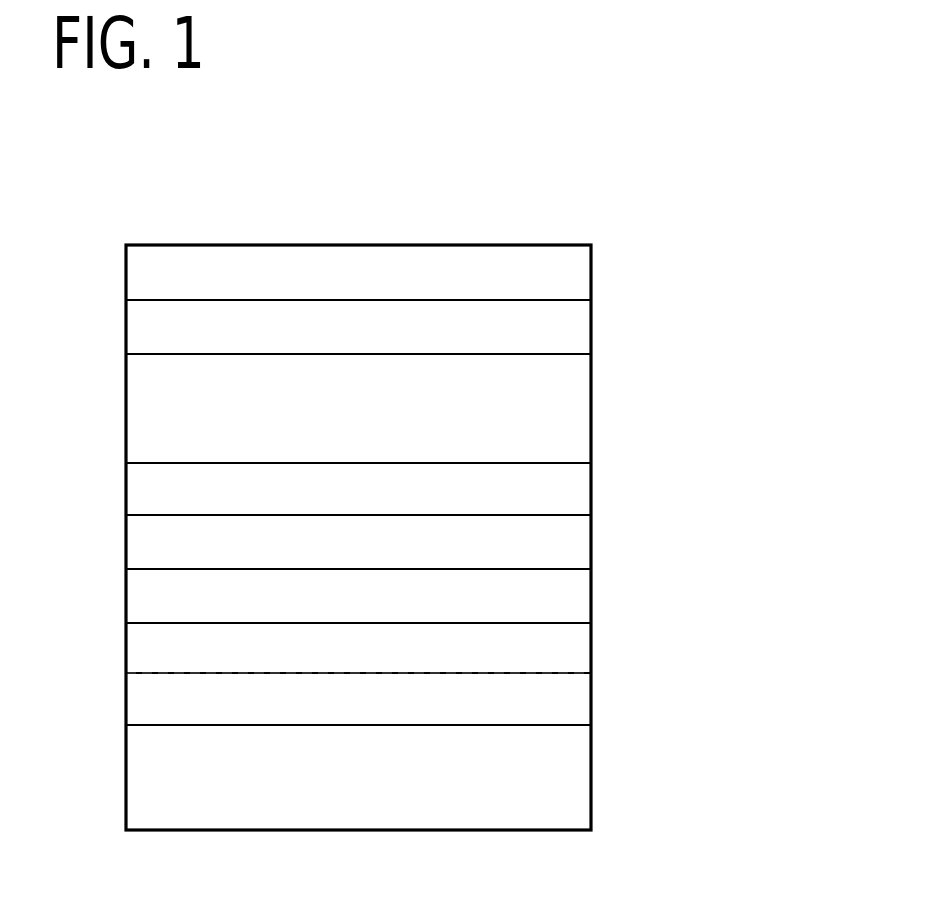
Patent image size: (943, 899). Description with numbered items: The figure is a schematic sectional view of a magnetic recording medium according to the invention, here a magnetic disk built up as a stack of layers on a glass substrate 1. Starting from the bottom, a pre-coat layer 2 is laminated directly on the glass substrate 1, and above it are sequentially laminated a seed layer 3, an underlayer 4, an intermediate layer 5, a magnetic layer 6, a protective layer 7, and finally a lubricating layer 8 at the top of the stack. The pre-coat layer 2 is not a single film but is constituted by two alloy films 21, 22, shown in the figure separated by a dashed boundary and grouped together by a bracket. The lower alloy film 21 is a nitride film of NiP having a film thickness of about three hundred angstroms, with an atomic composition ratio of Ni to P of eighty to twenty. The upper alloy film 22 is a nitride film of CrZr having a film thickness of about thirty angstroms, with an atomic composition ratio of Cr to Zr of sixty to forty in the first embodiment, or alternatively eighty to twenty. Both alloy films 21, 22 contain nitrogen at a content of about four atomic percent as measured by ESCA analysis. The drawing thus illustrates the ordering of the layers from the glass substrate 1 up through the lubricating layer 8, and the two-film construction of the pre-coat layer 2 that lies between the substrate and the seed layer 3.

The glass substrate 1 is at (573, 788).
The pre-coat layer 2 is at (594, 623).
The alloy film 21 is at (145, 698).
The alloy film 22 is at (140, 643).
The seed layer 3 is at (576, 597).
The underlayer 4 is at (576, 549).
The intermediate layer 5 is at (576, 494).
The magnetic layer 6 is at (578, 411).
The protective layer 7 is at (578, 334).
The lubricating layer 8 is at (578, 276).